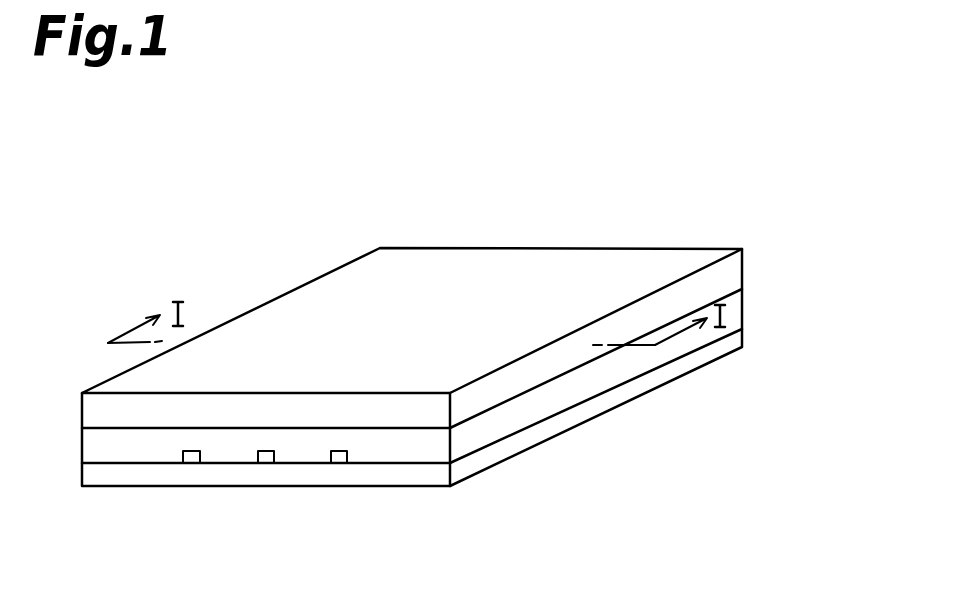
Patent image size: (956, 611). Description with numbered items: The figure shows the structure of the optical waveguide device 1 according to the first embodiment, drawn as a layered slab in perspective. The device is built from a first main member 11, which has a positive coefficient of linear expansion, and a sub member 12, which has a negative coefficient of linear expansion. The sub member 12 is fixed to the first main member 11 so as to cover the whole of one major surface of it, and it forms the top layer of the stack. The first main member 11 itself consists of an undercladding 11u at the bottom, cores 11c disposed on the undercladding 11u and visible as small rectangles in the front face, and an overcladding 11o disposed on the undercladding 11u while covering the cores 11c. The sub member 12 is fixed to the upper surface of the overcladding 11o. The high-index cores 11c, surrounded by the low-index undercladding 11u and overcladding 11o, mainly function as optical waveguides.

The optical waveguide device 1 is at (622, 238).
The sub member 12 is at (742, 271).
The first main member 11 is at (500, 386).
The overcladding 11o is at (742, 305).
The undercladding 11u is at (742, 335).
The cores 11c is at (338, 463).